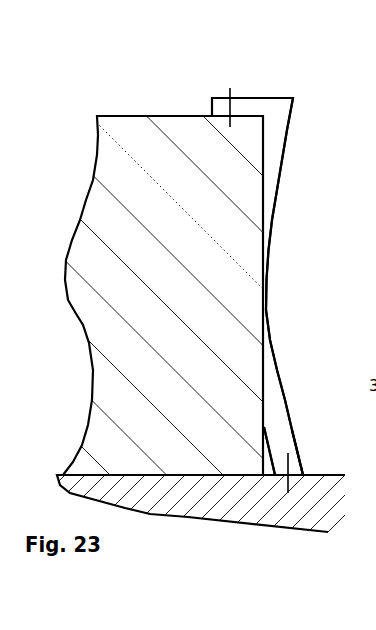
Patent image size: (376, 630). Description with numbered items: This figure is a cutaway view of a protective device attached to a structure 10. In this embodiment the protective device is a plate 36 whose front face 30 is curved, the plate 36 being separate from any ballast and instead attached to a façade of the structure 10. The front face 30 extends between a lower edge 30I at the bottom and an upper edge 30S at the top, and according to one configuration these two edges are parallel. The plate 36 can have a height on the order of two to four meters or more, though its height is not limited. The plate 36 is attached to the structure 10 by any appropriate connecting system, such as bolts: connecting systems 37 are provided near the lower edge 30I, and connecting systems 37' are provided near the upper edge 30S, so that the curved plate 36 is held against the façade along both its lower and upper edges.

The structure 10 is at (135, 135).
The front face 30 is at (274, 250).
The upper edge 30S is at (293, 98).
The lower edge 30I is at (302, 474).
The plate 36 is at (293, 193).
The connecting systems 37 is at (241, 523).
The connecting systems 37' is at (209, 65).